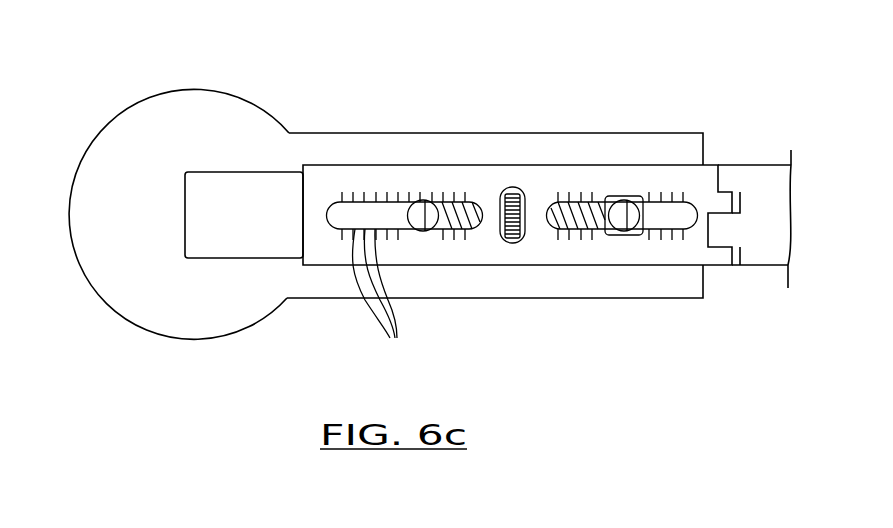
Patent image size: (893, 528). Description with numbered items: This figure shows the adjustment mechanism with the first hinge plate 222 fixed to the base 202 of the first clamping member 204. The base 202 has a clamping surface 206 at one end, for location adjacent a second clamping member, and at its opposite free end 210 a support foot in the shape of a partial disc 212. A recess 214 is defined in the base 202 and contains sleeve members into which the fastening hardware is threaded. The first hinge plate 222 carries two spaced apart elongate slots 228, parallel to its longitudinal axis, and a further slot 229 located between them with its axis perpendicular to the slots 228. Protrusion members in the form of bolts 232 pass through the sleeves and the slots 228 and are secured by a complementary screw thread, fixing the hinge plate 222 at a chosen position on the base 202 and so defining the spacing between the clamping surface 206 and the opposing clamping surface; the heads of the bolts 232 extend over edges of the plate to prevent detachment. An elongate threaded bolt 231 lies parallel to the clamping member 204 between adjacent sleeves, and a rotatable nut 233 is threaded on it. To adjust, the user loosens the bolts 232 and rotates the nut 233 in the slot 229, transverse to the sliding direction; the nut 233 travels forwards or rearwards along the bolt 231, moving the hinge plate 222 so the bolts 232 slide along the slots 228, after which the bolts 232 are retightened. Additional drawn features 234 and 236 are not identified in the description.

The base 202 is at (320, 278).
The first clamping member 204 is at (518, 133).
The clamping surface 206 is at (703, 148).
The free end 210 is at (250, 100).
The partial disc 212 is at (202, 120).
The recess 214 is at (260, 180).
The first hinge plate 222 is at (612, 177).
The elongate slots 228 is at (383, 210).
The further slot 229 is at (511, 250).
The threaded bolt 231 is at (466, 198).
The bolts 232 is at (432, 229).
The rotatable nut 233 is at (540, 192).
The wires 234 is at (382, 300).
The nut 236 is at (647, 235).